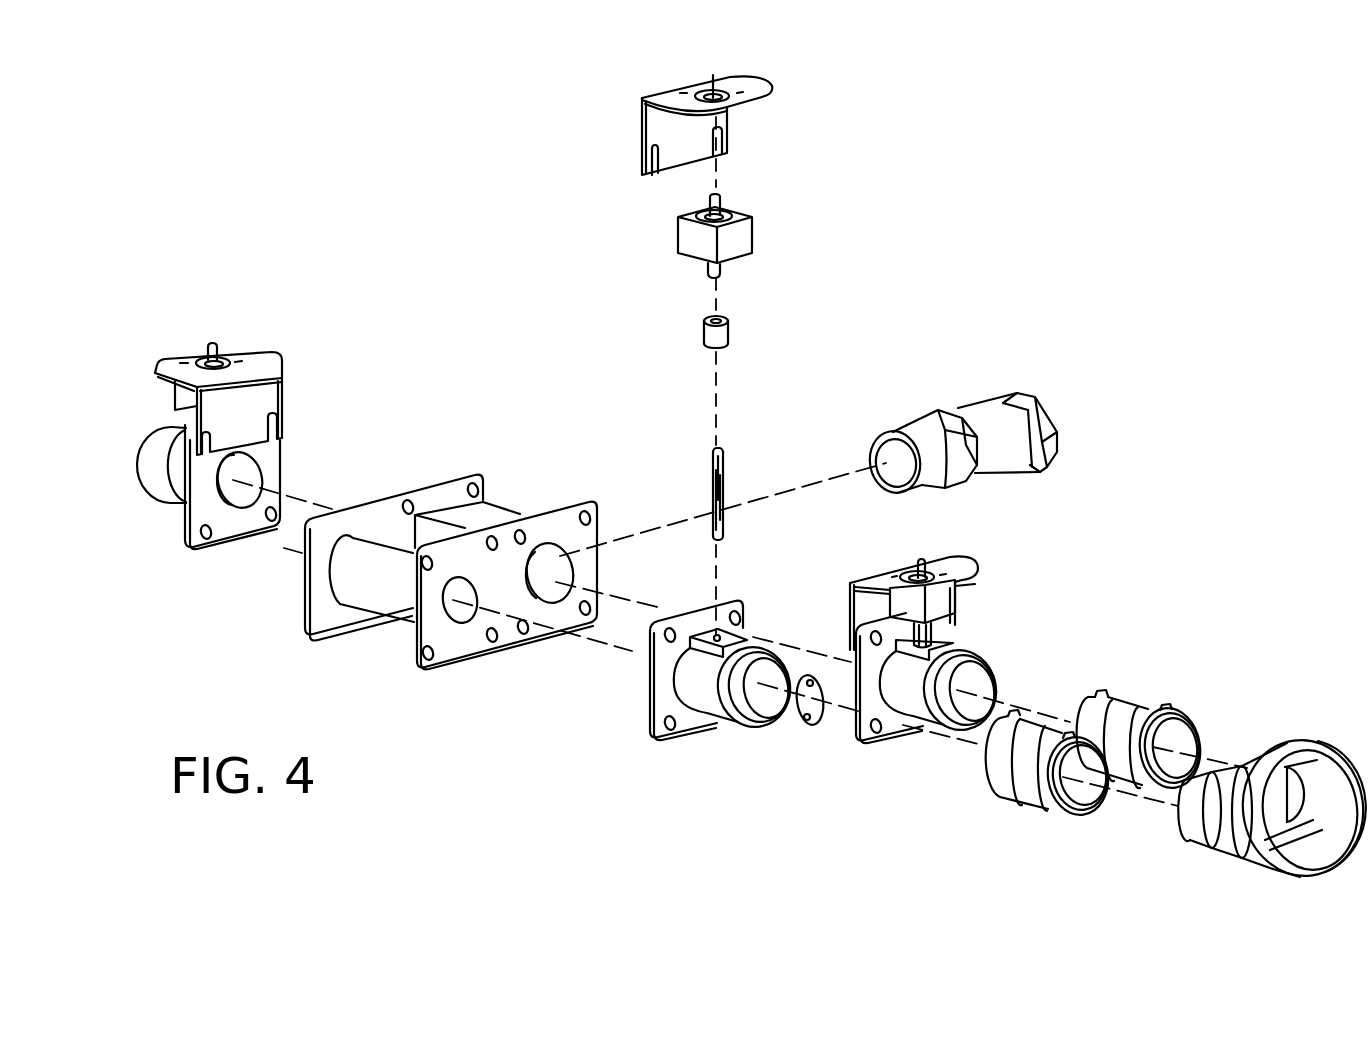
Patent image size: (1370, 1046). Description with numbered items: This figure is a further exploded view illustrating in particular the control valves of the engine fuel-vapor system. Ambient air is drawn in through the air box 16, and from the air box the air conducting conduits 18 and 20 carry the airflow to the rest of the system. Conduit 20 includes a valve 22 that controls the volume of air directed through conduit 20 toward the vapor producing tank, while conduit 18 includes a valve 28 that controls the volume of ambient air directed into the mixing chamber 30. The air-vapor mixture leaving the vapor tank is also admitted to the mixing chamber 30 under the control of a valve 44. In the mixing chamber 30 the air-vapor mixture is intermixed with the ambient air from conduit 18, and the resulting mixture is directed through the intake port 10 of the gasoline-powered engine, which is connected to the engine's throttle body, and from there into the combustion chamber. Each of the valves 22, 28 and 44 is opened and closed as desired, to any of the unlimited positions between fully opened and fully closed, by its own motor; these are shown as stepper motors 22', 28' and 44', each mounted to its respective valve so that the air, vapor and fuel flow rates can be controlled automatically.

The intake port 10 is at (978, 393).
The air box 16 is at (1295, 746).
The air conducting conduit 18 is at (1132, 700).
The air conducting conduit 20 is at (360, 584).
The valve 22 is at (664, 409).
The stepper motor 22' is at (777, 236).
The valve 28 is at (928, 726).
The stepper motor 28' is at (966, 603).
The mixing chamber 30 is at (507, 510).
The valve 44 is at (208, 398).
The stepper motor 44' is at (187, 399).